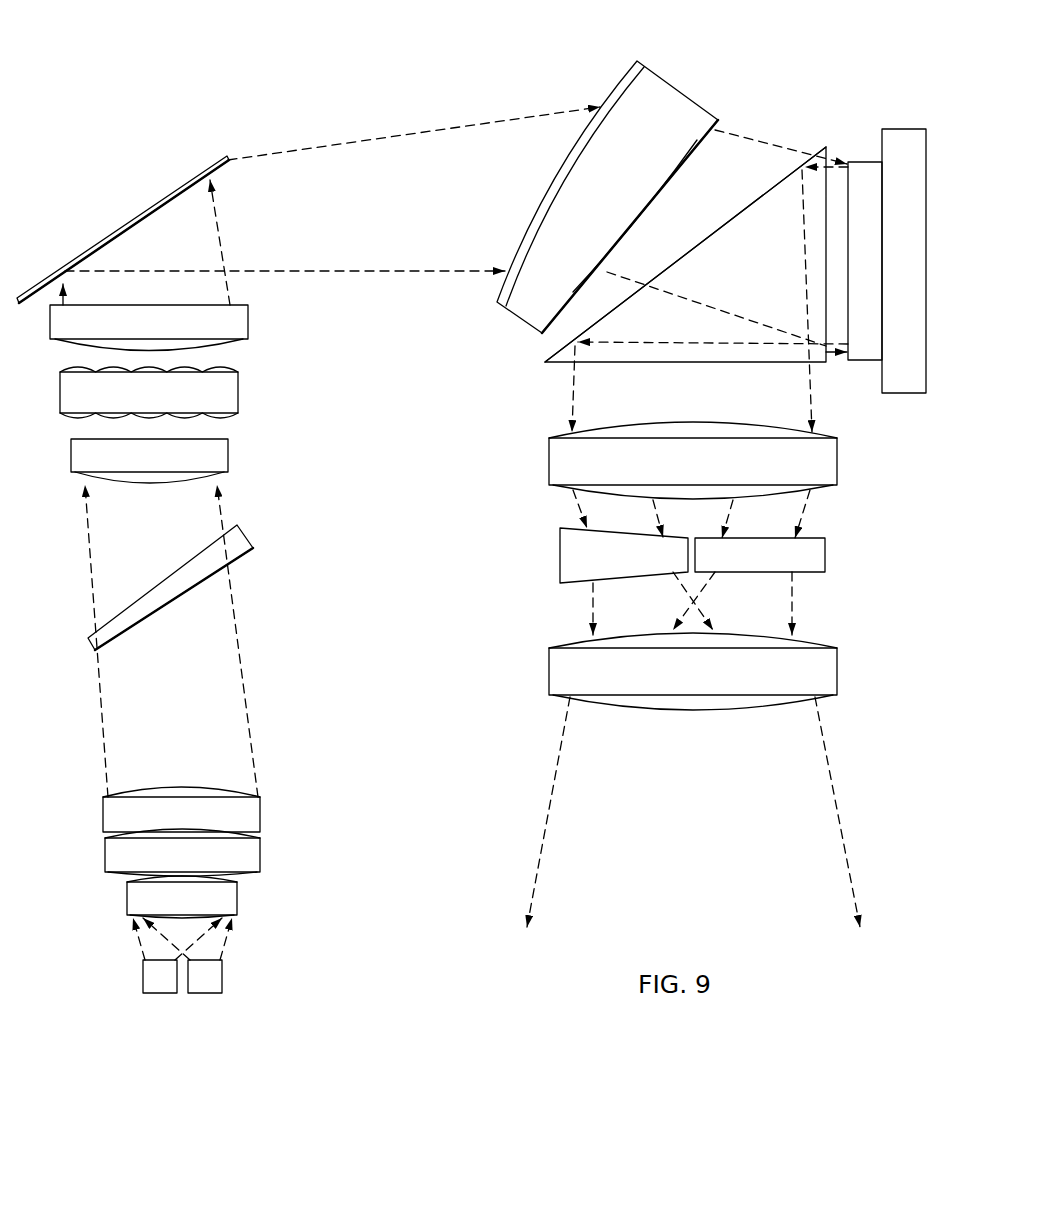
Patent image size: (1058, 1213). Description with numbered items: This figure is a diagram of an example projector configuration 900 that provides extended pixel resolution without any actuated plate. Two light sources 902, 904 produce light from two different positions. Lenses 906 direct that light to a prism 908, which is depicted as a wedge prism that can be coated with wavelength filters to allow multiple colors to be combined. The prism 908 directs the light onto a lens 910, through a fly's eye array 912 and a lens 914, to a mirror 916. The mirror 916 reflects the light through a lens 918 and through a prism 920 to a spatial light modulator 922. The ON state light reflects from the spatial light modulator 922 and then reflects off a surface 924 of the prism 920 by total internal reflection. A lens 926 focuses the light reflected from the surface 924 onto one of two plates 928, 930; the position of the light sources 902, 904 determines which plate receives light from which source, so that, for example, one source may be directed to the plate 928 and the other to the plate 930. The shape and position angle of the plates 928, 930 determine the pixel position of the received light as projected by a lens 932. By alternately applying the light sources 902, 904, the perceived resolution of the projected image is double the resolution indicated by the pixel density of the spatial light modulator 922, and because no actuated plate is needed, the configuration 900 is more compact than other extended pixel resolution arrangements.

The projector configuration 900 is at (285, 80).
The light source 902 is at (143, 976).
The light source 904 is at (222, 976).
The lenses 906 is at (85, 788).
The prism 908 is at (88, 645).
The lens 910 is at (230, 462).
The fly's eye array 912 is at (240, 392).
The lens 914 is at (248, 323).
The mirror 916 is at (120, 228).
The lens 918 is at (678, 88).
The prism 920 is at (560, 352).
The spatial light modulator 922 is at (903, 128).
The surface 924 is at (763, 193).
The lens 926 is at (838, 462).
The plate 928 is at (560, 555).
The plate 930 is at (826, 556).
The lens 932 is at (838, 673).